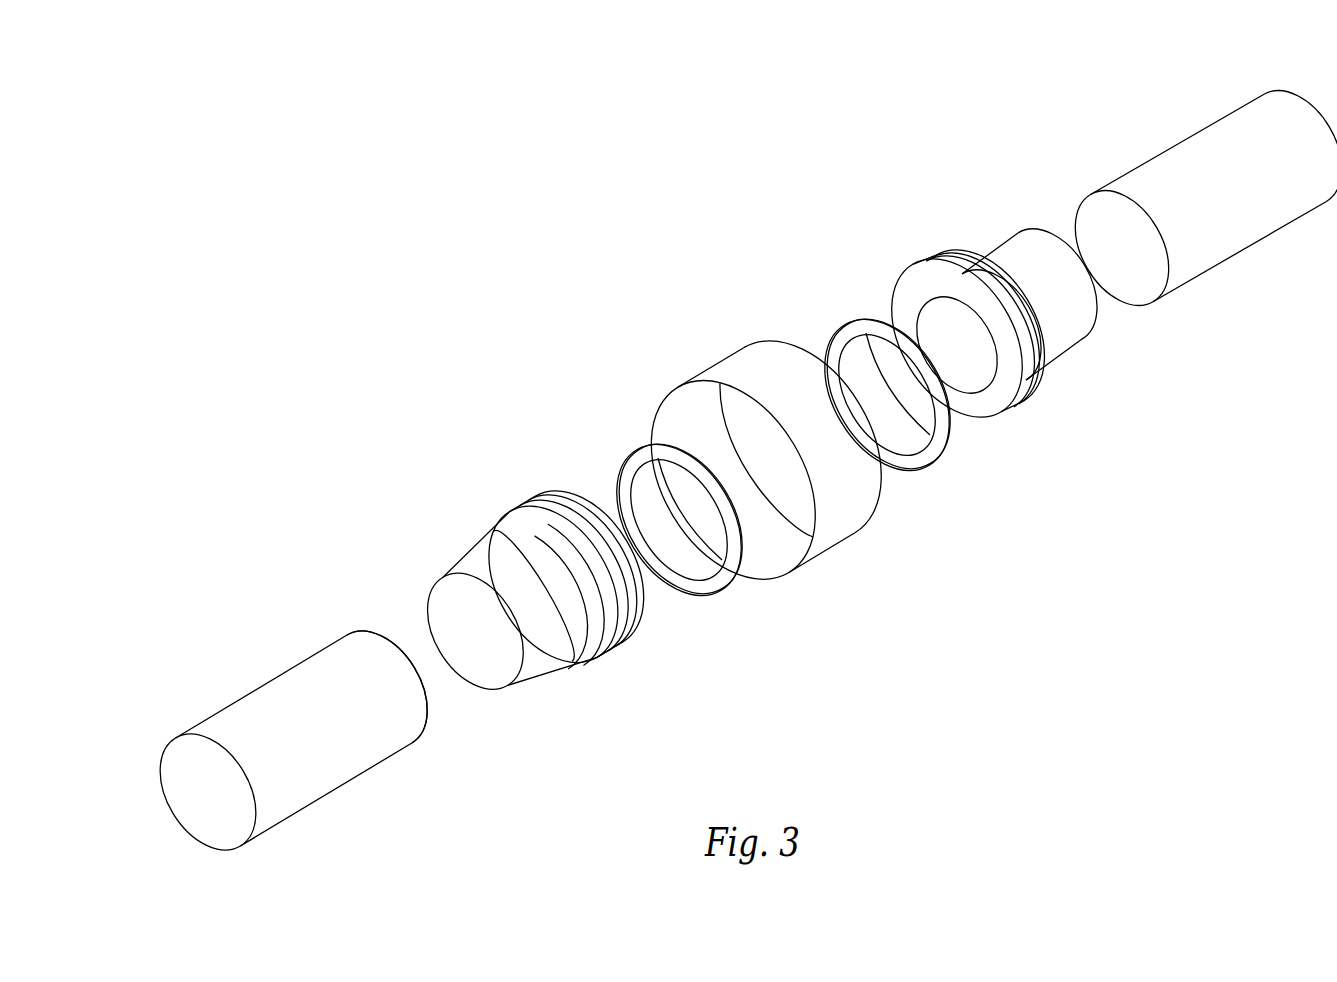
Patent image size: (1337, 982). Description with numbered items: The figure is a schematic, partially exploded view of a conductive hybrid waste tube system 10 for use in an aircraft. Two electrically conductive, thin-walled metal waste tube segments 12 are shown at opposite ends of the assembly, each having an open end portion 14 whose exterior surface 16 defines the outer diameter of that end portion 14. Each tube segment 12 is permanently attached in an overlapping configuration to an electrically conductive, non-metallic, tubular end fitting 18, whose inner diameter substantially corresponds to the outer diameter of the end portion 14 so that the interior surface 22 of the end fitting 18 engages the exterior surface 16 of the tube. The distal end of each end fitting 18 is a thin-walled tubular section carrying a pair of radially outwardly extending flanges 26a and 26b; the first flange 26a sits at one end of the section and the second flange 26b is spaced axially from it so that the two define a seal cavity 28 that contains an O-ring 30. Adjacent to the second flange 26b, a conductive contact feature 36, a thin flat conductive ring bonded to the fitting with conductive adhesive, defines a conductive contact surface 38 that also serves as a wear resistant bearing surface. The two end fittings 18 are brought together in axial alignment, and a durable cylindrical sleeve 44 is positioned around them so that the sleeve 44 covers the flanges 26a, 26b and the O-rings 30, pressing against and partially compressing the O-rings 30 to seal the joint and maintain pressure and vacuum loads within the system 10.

The hybrid waste tube system 10 is at (459, 246).
The waste tube segment 12 is at (290, 795).
The open end portion 14 is at (388, 738).
The exterior surface 16 is at (328, 738).
The end fitting 18 is at (512, 609).
The interior surface 22 is at (445, 602).
The first flange 26a is at (627, 627).
The second flange 26b is at (510, 527).
The seal cavity 28 is at (548, 498).
The O-ring 30 is at (717, 593).
The conductive contact feature 36 is at (525, 543).
The conductive contact surface 38 is at (588, 640).
The cylindrical sleeve 44 is at (838, 528).